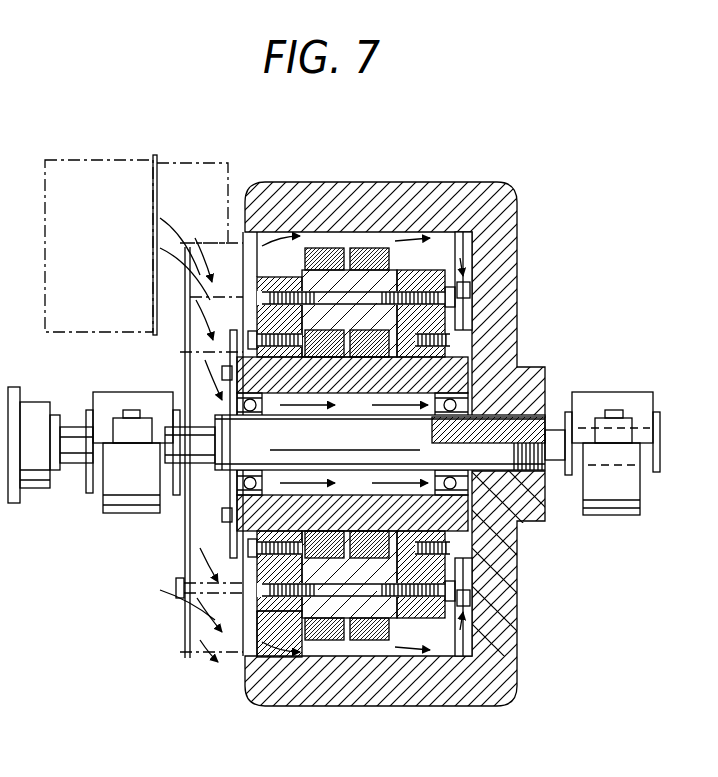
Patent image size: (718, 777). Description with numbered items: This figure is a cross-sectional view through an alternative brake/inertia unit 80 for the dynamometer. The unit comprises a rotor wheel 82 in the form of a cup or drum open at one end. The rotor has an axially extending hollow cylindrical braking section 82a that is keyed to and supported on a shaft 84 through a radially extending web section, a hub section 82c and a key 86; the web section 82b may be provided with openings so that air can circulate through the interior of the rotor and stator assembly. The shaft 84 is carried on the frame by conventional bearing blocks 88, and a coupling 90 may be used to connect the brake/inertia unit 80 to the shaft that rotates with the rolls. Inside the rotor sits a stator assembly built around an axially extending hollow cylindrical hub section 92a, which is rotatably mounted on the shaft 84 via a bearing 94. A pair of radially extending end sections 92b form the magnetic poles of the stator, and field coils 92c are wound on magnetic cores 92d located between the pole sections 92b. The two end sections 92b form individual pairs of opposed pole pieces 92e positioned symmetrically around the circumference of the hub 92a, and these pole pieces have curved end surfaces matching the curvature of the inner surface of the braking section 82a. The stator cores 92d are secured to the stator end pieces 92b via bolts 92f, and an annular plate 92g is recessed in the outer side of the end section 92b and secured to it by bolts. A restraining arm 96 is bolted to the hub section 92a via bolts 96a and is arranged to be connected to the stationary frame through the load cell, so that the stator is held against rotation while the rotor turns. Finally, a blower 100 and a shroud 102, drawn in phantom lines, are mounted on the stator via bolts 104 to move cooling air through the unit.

The brake/inertia unit 80 is at (377, 430).
The rotor wheel 82 is at (437, 417).
The braking section 82a is at (343, 230).
The web section 82b is at (515, 302).
The hub section 82c is at (547, 390).
The shaft 84 is at (547, 497).
The key 86 is at (545, 402).
The bearing blocks 88 is at (103, 390).
The coupling 90 is at (33, 488).
The hub section 92a is at (470, 530).
The end sections 92b is at (282, 268).
The field coils 92c is at (365, 262).
The magnetic cores 92d is at (455, 237).
The pole pieces 92e is at (262, 700).
The bolts 92f is at (207, 280).
The annular plate 92g is at (262, 590).
The bearing 94 is at (230, 482).
The restraining arm 96 is at (240, 492).
The bolts 96a is at (228, 368).
The blower 100 is at (102, 245).
The shroud 102 is at (195, 158).
The bolts 104 is at (175, 600).